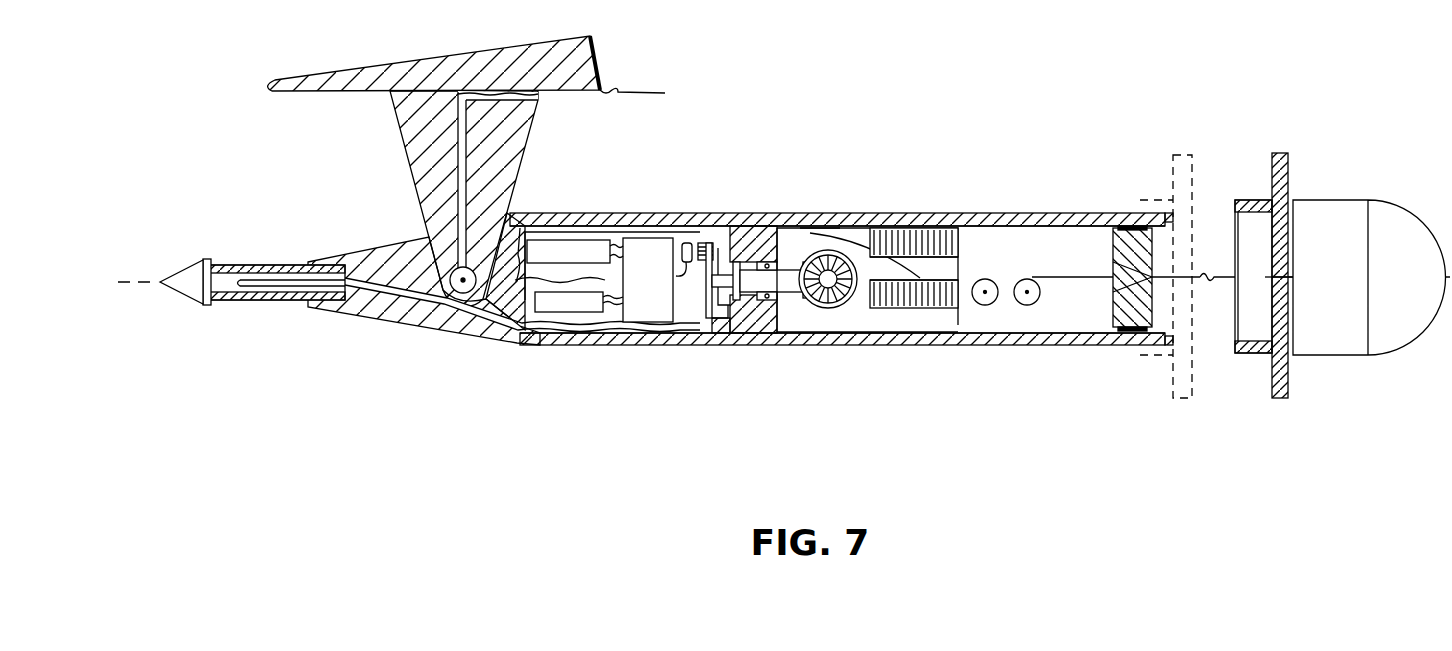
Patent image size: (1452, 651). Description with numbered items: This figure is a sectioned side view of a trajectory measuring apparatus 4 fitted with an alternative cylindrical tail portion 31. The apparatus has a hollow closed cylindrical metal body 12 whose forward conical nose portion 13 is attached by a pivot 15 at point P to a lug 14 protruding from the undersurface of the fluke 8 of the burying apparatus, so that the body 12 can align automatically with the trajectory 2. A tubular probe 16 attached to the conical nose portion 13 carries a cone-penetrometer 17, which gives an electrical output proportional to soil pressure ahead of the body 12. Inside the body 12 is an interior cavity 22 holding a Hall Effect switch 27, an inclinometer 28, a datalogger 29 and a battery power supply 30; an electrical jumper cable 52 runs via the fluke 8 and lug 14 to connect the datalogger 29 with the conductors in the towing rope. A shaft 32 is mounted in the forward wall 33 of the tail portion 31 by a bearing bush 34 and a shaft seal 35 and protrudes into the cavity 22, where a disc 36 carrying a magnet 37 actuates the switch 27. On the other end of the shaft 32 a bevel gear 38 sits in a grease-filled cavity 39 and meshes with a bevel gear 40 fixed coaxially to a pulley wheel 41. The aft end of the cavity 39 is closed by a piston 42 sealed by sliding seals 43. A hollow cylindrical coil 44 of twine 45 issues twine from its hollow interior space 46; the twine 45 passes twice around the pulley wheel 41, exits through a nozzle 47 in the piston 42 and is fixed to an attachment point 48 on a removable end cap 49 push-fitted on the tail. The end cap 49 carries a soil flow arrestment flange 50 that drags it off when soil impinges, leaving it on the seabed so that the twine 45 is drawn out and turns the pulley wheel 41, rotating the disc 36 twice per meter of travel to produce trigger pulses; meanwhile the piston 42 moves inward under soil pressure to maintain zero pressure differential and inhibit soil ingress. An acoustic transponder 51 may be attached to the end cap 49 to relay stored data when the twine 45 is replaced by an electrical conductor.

The trajectory 2 is at (146, 278).
The trajectory measuring apparatus 4 is at (762, 133).
The fluke 8 is at (322, 72).
The body 12 is at (563, 212).
The conical nose portion 13 is at (378, 318).
The lug 14 is at (424, 160).
The pivot 15 is at (457, 302).
The tubular probe 16 is at (275, 302).
The cone-penetrometer 17 is at (195, 296).
The interior cavity 22 is at (682, 312).
The Hall Effect switch 27 is at (685, 242).
The inclinometer 28 is at (582, 312).
The datalogger 29 is at (638, 280).
The battery power supply 30 is at (568, 251).
The cylindrical tail portion 31 is at (900, 345).
The shaft 32 is at (788, 292).
The forward wall 33 is at (748, 228).
The bearing bush 34 is at (750, 320).
The shaft seal 35 is at (772, 262).
The disc 36 is at (706, 318).
The magnet 37 is at (700, 242).
The bevel gear 38 is at (826, 308).
The grease-filled cavity 39 is at (985, 322).
The bevel gear 40 is at (832, 235).
The pulley wheel 41 is at (818, 228).
The piston 42 is at (1127, 258).
The sliding seals 43 is at (1146, 228).
The coil 44 is at (930, 240).
The twine 45 is at (863, 220).
The hollow interior space 46 is at (940, 270).
The nozzle 47 is at (1122, 288).
The attachment point 48 is at (1278, 288).
The end cap 49 is at (1255, 200).
The soil flow arrestment flange 50 is at (1282, 162).
The acoustic transponder 51 is at (1315, 210).
The electrical jumper cable 52 is at (616, 92).
The point P is at (470, 293).